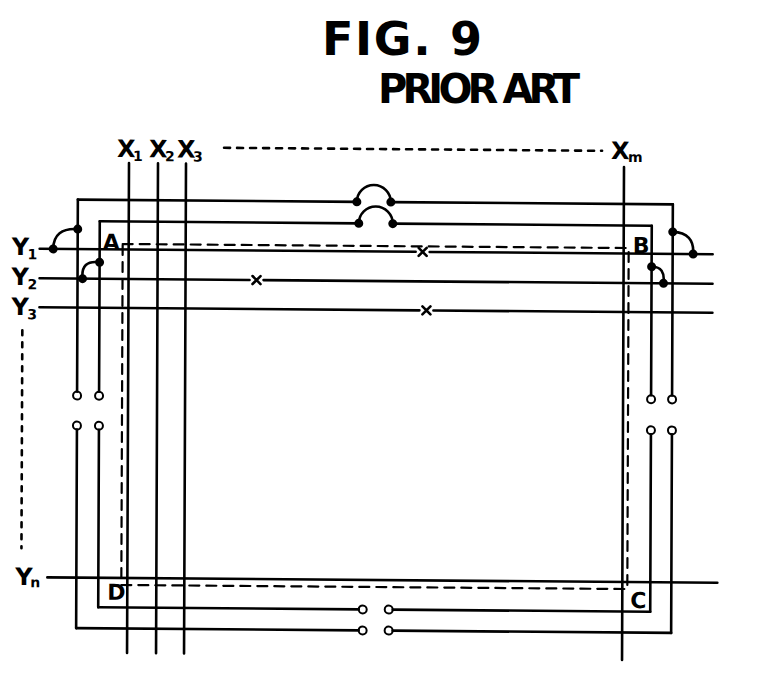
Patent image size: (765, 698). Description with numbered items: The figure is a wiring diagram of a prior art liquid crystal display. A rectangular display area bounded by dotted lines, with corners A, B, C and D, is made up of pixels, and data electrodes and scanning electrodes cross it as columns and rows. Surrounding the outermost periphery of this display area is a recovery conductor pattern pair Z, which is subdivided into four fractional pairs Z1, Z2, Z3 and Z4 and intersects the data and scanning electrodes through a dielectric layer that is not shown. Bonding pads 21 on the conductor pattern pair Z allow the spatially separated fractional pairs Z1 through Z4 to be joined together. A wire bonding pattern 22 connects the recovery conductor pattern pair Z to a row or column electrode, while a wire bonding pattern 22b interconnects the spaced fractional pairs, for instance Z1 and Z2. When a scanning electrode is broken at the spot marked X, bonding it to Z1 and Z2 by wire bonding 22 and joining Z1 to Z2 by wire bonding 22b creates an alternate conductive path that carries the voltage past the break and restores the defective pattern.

The bonding pads 21 is at (73, 428).
The wire bonding pattern 22 is at (99, 264).
The wire bonding pattern 22b is at (393, 222).
The conductor pattern pair Z is at (99, 505).
The fractional recovery conductor pattern pair Z1 is at (257, 202).
The fractional recovery conductor pattern pair Z2 is at (558, 202).
The fractional recovery conductor pattern pair Z3 is at (672, 497).
The fractional recovery conductor pattern pair Z4 is at (249, 631).